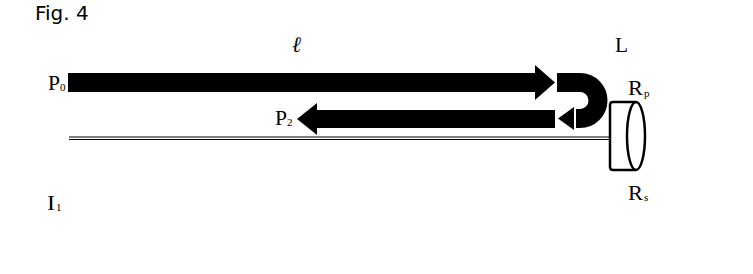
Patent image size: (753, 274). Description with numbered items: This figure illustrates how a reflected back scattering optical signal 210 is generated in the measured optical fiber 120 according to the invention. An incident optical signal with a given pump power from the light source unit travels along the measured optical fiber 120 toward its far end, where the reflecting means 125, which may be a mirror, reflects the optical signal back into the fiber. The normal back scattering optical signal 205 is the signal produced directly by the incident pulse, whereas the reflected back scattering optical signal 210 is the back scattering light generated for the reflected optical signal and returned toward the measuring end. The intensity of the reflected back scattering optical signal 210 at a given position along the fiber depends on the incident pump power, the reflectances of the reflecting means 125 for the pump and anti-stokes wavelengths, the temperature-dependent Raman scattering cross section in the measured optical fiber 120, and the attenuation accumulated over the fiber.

The measured optical fiber 120 is at (187, 138).
The reflecting means 125 is at (643, 120).
The normal back scattering optical signal 205 is at (415, 73).
The reflected back scattering optical signal 210 is at (402, 207).